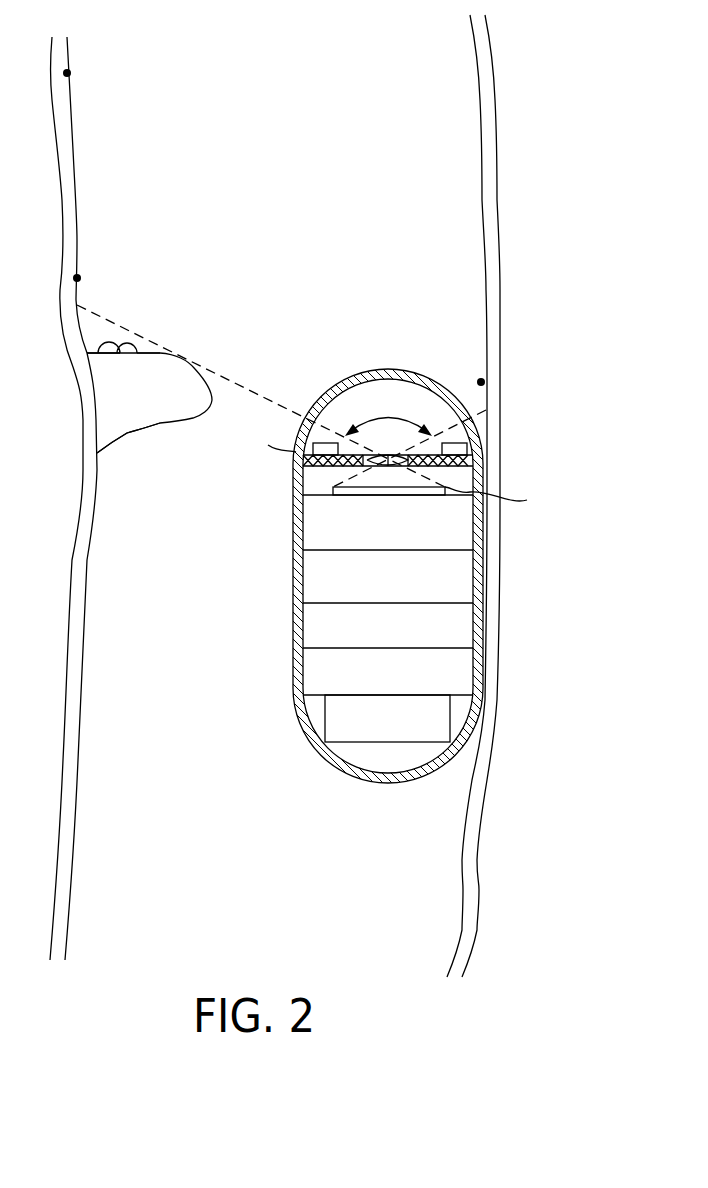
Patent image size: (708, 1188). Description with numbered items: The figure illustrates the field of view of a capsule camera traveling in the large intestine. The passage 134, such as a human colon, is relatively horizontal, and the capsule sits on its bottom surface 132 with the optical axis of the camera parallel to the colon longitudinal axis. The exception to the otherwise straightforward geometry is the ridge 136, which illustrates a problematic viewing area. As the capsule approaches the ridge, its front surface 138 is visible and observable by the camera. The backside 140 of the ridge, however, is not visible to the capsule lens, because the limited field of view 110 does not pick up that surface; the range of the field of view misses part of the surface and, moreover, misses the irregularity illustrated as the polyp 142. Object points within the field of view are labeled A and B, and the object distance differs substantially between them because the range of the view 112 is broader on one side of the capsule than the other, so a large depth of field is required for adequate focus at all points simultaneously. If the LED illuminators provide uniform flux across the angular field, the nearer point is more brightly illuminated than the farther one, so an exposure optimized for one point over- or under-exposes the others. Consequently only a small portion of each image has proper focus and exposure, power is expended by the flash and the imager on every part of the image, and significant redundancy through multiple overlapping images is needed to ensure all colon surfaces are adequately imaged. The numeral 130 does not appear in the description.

The field of view 110 is at (434, 411).
The field of view range 112 is at (150, 348).
The cavity wall 130 is at (86, 563).
The bottom surface 132 is at (483, 293).
The passage 134 is at (293, 132).
The ridge 136 is at (192, 454).
The front surface 138 is at (138, 436).
The backside 140 is at (92, 352).
The polyp 142 is at (122, 343).